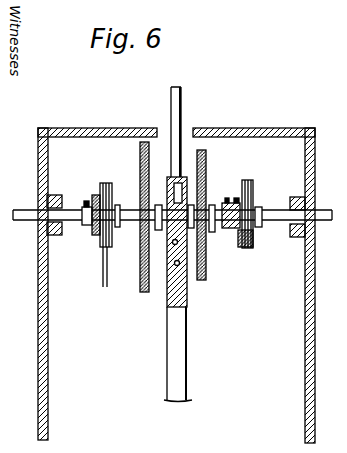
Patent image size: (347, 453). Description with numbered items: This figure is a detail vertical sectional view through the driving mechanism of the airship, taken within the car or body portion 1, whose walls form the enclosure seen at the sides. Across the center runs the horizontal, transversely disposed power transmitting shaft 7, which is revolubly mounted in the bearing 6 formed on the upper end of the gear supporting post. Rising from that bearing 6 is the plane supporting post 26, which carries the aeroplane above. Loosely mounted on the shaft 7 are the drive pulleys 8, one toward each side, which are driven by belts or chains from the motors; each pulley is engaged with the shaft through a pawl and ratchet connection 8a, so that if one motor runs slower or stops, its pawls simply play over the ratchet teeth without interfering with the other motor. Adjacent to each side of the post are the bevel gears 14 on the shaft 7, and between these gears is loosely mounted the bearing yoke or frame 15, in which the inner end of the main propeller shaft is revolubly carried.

The car or body portion 1 is at (308, 347).
The power transmitting shaft 7 is at (32, 221).
The bearing 6 is at (151, 232).
The plane supporting post 26 is at (176, 117).
The bevel gears 14 is at (145, 293).
The bearing yoke or frame 15 is at (154, 204).
The pawl and ratchet connection 8a is at (240, 230).
The drive pulleys 8 is at (112, 191).